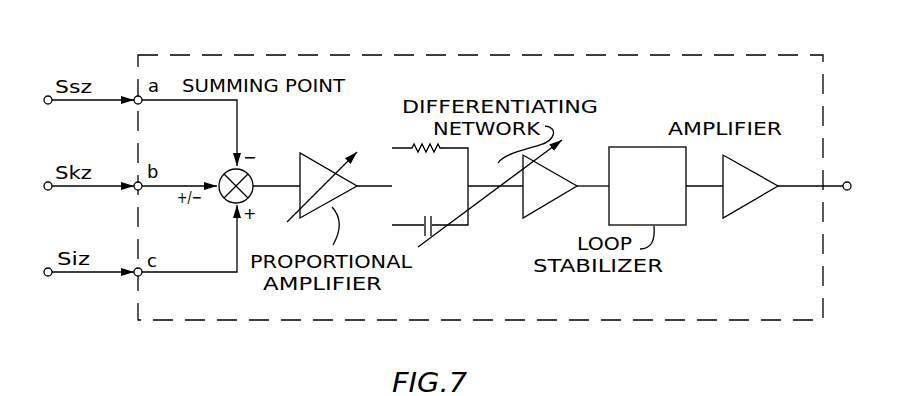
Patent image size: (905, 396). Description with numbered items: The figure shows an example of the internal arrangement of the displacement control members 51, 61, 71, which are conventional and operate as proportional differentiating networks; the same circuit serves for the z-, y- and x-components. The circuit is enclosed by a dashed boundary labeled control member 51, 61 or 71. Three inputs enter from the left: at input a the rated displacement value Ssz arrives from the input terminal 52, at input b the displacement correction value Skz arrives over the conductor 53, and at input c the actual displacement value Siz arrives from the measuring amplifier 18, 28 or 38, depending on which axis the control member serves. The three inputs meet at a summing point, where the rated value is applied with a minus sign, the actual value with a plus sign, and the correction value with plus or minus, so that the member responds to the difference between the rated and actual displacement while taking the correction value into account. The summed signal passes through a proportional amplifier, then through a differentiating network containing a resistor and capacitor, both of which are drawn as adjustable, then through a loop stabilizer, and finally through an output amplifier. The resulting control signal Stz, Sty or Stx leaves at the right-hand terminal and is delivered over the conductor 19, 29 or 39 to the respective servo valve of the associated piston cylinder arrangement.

The control member 51 is at (480, 168).
The displacement control member 61 is at (480, 168).
The displacement control member 71 is at (697, 56).
The input terminal 52 is at (45, 104).
The conductor 53 is at (45, 190).
The measuring amplifier 18 is at (87, 306).
The measuring amplifier 28 is at (87, 306).
The measuring amplifier 38 is at (46, 277).
The conductor 19 is at (833, 211).
The conductor 29 is at (833, 211).
The conductor 39 is at (851, 185).